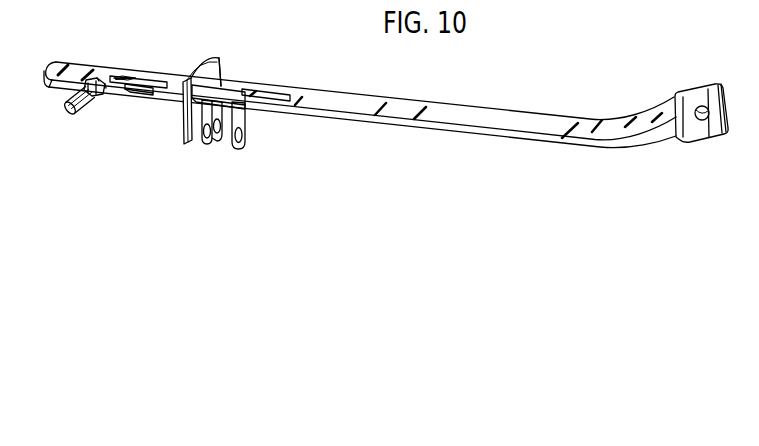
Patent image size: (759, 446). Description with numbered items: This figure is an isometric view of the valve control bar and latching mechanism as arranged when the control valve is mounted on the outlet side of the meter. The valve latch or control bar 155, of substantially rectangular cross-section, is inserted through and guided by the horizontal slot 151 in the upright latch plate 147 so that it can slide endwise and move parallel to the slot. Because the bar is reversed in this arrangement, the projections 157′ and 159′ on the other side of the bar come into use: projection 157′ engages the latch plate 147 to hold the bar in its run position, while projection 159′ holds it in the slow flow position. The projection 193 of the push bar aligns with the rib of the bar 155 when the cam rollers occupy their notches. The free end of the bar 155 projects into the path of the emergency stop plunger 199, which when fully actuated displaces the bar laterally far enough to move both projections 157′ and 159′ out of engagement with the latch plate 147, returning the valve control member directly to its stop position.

The latch plate 147 is at (222, 67).
The horizontal slot 151 is at (212, 83).
The valve latch or control bar 155 is at (442, 127).
The projection 157′ is at (146, 93).
The projection 159′ is at (198, 101).
The projection of the push bar 193 is at (246, 93).
The emergency stop plunger 199 is at (73, 117).